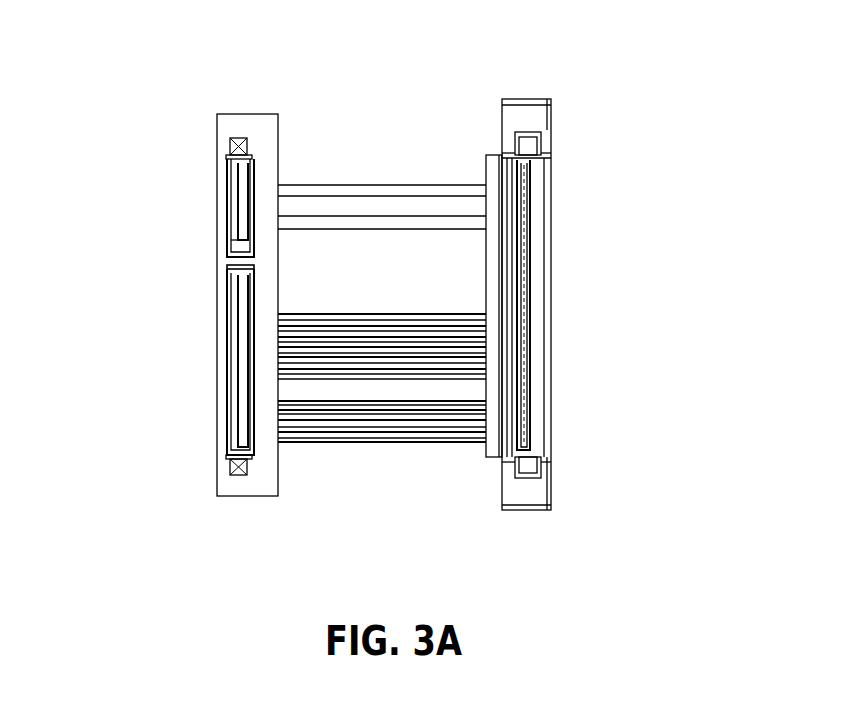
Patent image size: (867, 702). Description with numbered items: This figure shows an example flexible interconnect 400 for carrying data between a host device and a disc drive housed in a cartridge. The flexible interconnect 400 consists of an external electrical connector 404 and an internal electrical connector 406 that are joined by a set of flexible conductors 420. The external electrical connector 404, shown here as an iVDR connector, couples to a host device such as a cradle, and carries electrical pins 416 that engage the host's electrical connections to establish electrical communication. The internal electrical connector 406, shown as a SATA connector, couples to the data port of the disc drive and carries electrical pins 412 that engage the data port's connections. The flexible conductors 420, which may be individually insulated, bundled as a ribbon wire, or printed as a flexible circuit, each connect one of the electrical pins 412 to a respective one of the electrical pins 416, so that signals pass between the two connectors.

The flexible interconnect 400 is at (130, 108).
The external electrical connector 404 is at (525, 485).
The internal electrical connector 406 is at (245, 486).
The electrical pins 412 is at (243, 372).
The electrical pins 416 is at (515, 338).
The flexible conductors 420 is at (403, 222).